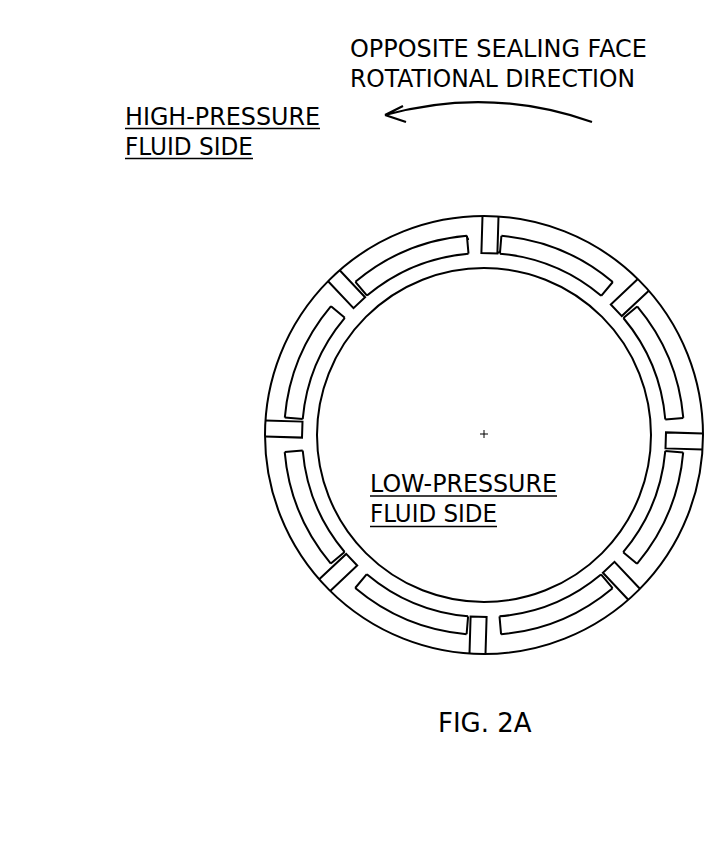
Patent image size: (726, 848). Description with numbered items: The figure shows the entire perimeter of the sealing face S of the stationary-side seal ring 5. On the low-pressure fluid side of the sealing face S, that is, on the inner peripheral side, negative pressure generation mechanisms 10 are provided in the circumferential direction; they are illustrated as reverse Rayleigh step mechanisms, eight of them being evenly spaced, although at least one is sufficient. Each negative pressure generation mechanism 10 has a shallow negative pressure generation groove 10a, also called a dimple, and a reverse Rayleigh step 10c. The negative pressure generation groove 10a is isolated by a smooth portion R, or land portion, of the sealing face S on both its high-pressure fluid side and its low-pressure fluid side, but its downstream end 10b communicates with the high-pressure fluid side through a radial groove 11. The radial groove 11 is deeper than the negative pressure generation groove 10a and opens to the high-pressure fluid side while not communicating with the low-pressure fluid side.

The stationary-side seal ring 5 is at (488, 401).
The sealing face S is at (623, 278).
The negative pressure generation mechanism 10 is at (484, 387).
The negative pressure generation groove 10a is at (424, 250).
The downstream end 10b is at (385, 281).
The reverse Rayleigh step 10c is at (455, 265).
The radial groove 11 is at (334, 278).
The smooth portion R is at (442, 227).